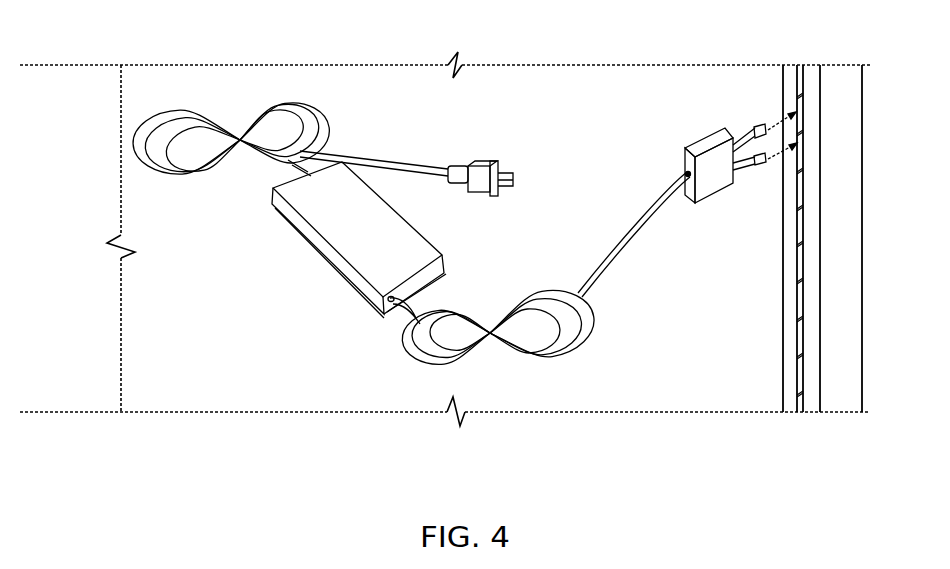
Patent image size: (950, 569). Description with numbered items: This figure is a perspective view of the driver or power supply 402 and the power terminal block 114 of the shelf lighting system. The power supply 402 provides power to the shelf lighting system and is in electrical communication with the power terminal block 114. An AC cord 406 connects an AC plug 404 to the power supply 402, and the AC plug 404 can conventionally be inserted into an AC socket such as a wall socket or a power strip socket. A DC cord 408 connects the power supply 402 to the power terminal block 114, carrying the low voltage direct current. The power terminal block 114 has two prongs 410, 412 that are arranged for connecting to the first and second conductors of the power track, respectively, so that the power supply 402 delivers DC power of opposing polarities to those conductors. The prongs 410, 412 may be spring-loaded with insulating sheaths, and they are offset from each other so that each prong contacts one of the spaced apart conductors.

The power terminal block 114 is at (732, 181).
The power supply 402 is at (398, 249).
The AC plug 404 is at (481, 165).
The AC cord 406 is at (269, 106).
The DC cord 408 is at (464, 311).
The prong 410 is at (750, 127).
The prong 412 is at (752, 172).